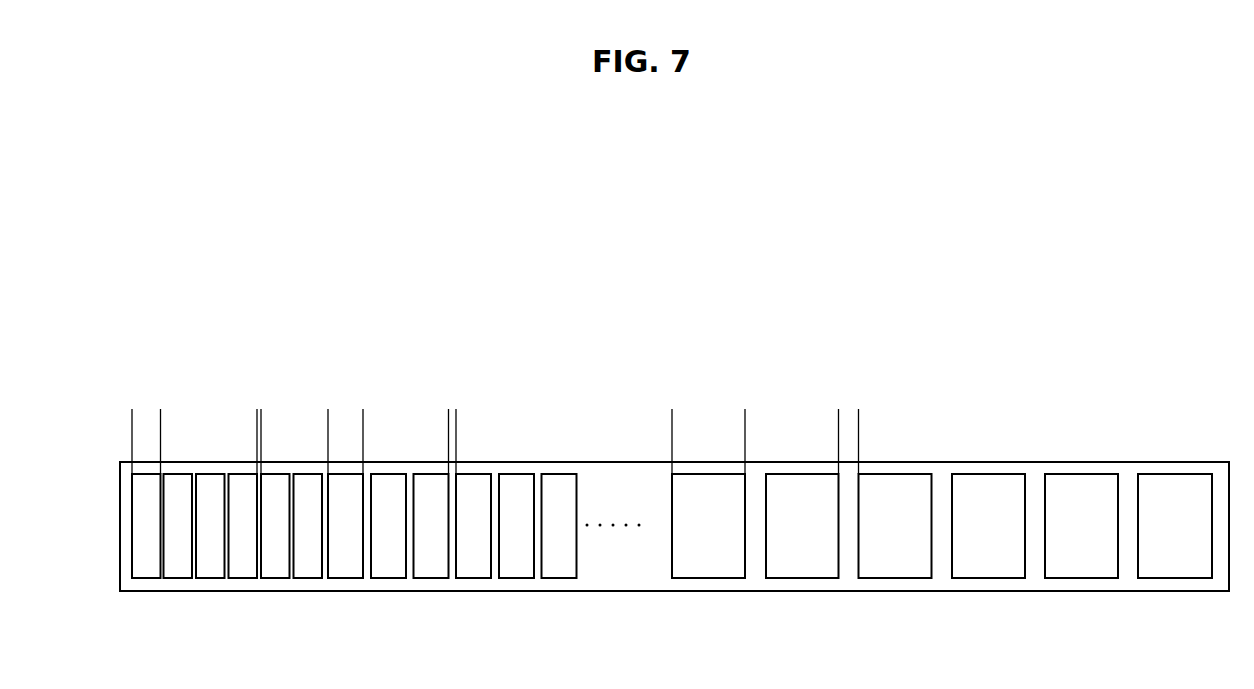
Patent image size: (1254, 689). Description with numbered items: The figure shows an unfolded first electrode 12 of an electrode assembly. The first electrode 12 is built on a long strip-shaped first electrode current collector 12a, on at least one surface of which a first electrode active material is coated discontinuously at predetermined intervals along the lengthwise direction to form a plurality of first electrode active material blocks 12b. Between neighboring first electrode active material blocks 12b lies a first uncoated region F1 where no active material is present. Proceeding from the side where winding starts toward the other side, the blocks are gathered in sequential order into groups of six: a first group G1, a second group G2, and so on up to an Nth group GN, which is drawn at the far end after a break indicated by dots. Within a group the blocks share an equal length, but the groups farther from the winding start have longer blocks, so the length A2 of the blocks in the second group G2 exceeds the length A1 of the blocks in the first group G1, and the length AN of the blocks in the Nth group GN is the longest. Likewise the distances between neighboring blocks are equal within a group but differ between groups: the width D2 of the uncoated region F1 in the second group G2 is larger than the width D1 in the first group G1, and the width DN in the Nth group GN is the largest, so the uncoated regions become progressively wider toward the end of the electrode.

The first electrode 12 is at (807, 377).
The first electrode current collector 12a is at (617, 470).
The first electrode active material block 12b is at (708, 501).
The first uncoated region F1 is at (164, 480).
The first group G1 is at (227, 532).
The second group G2 is at (577, 578).
The Nth group GN is at (942, 536).
The length of first electrode active material blocks of first group A1 is at (188, 414).
The width of uncoated region in first group D1 is at (230, 414).
The length of first electrode active material blocks of second group A2 is at (390, 414).
The width of uncoated region in second group D2 is at (482, 414).
The length of first electrode active material blocks of Nth group AN is at (672, 414).
The width of uncoated region in Nth group DN is at (812, 414).